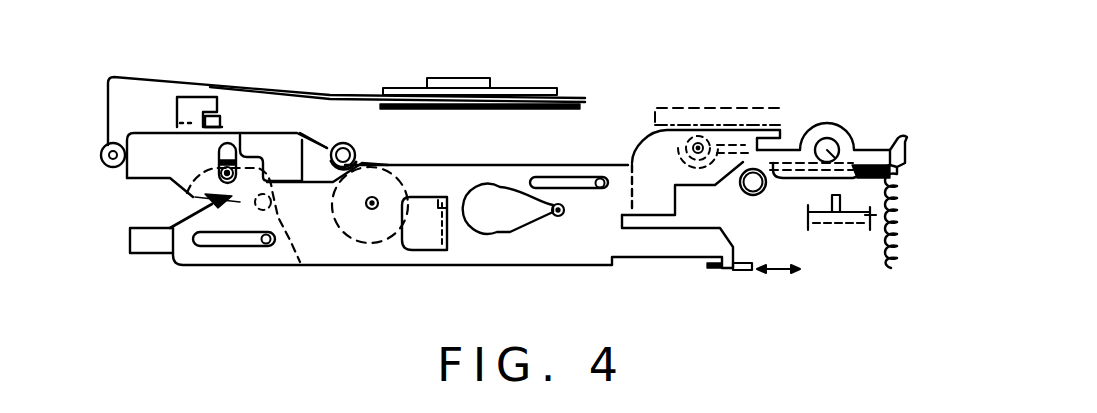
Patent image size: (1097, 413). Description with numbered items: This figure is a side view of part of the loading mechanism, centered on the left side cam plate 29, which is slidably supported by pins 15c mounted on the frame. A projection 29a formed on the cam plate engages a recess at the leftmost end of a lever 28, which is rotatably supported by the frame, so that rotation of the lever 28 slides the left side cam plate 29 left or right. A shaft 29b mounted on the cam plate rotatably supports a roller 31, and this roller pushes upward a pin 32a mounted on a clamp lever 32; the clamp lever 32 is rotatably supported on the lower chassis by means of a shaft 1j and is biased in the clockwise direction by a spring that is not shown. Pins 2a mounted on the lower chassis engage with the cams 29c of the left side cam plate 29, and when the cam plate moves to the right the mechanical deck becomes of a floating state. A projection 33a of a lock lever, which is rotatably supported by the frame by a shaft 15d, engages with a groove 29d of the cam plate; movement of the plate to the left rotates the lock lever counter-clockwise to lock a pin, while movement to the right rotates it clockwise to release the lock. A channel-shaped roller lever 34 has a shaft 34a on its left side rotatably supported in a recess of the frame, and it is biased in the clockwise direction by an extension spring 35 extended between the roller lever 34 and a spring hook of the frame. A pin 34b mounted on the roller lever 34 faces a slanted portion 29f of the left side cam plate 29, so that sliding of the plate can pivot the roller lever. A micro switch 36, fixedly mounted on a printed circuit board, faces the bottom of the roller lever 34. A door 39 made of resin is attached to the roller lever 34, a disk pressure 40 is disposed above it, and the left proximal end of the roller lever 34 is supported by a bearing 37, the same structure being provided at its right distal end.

The shaft 1j is at (108, 148).
The pins 2a is at (221, 204).
The pins 15c is at (268, 250).
The shaft 15d is at (305, 265).
The lever 28 is at (710, 265).
The left side cam plate 29 is at (485, 257).
The projection 29a is at (728, 268).
The shaft 29b is at (372, 210).
The cams 29c is at (167, 255).
The groove 29d is at (233, 142).
The slanted portion 29f is at (725, 190).
The roller 31 is at (368, 164).
The clamp lever 32 is at (355, 95).
The pin 32a is at (335, 148).
The projection 33a is at (200, 197).
The roller lever 34 is at (870, 150).
The shaft 34a is at (827, 145).
The pin 34b is at (773, 187).
The extension spring 35 is at (903, 235).
The micro switch 36 is at (855, 207).
The bearing 37 is at (698, 142).
The door 39 is at (927, 133).
The disk pressure 40 is at (718, 107).